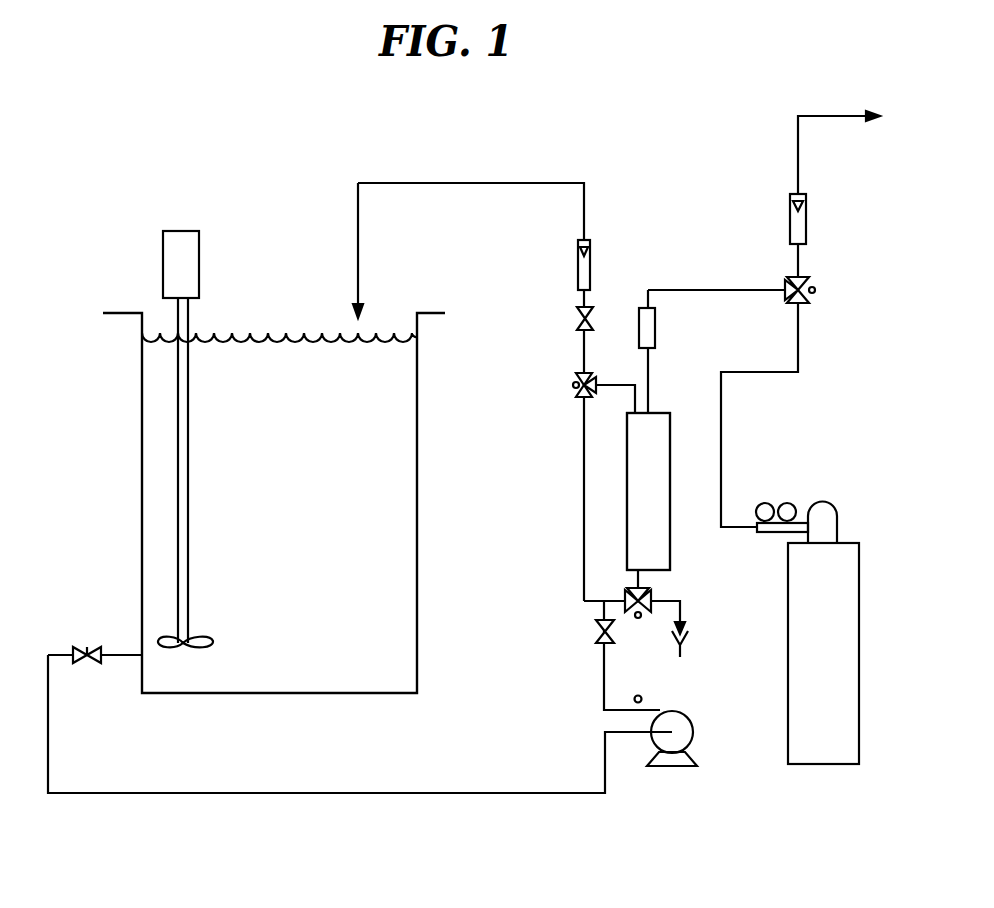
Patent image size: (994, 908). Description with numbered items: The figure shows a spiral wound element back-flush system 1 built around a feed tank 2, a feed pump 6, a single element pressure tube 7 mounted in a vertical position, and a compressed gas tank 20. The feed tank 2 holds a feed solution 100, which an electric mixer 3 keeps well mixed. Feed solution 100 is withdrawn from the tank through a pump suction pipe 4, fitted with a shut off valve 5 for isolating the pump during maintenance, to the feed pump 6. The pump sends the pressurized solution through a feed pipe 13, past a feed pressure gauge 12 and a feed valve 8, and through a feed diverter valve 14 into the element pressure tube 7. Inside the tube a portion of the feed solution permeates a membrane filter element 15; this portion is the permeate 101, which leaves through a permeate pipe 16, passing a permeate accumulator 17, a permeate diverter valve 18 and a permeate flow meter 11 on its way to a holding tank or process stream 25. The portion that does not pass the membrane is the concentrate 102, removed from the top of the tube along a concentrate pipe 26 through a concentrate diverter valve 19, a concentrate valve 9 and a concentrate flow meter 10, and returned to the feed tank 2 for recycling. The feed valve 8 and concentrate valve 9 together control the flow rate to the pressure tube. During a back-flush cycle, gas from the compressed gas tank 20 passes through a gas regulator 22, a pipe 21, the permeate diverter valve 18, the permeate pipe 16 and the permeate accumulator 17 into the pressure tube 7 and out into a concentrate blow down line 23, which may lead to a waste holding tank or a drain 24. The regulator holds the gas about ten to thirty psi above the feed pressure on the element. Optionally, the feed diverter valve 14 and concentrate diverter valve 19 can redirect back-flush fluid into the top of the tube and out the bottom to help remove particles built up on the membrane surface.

The spiral element back-flush system 1 is at (286, 176).
The feed tank 2 is at (141, 449).
The electric mixer 3 is at (199, 258).
The pump suction pipe 4 is at (440, 794).
The shut off valve 5 is at (87, 646).
The feed pump 6 is at (688, 746).
The element pressure tube 7 is at (627, 506).
The feed valve 8 is at (596, 632).
The concentrate valve 9 is at (577, 318).
The concentrate flow meter 10 is at (578, 262).
The permeate flow meter 11 is at (806, 222).
The feed pressure gauge 12 is at (642, 699).
The feed pipe 13 is at (604, 682).
The feed diverter valve 14 is at (638, 618).
The membrane filter element 15 is at (637, 458).
The permeate pipe 16 is at (651, 290).
The permeate accumulator 17 is at (656, 334).
The permeate diverter valve 18 is at (816, 290).
The concentrate diverter valve 19 is at (573, 385).
The compressed gas tank 20 is at (859, 638).
The pipe 21 is at (721, 415).
The gas regulator 22 is at (791, 503).
The concentrate blow down line 23 is at (680, 601).
The drain 24 is at (684, 650).
The holding tank or process stream 25 is at (857, 148).
The concentrate pipe 26 is at (389, 183).
The feed solution 100 is at (260, 522).
The permeate 101 is at (732, 290).
The concentrate 102 is at (455, 183).